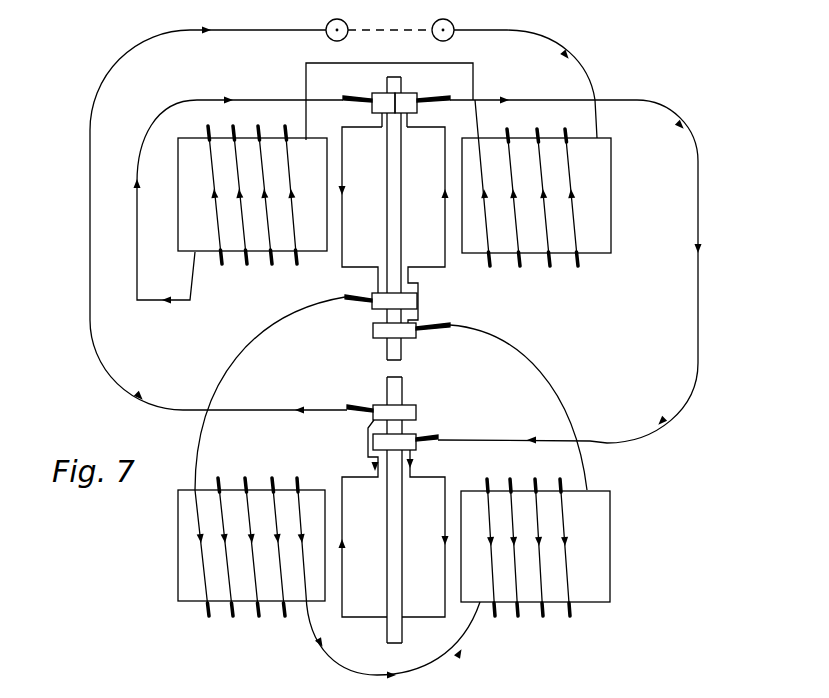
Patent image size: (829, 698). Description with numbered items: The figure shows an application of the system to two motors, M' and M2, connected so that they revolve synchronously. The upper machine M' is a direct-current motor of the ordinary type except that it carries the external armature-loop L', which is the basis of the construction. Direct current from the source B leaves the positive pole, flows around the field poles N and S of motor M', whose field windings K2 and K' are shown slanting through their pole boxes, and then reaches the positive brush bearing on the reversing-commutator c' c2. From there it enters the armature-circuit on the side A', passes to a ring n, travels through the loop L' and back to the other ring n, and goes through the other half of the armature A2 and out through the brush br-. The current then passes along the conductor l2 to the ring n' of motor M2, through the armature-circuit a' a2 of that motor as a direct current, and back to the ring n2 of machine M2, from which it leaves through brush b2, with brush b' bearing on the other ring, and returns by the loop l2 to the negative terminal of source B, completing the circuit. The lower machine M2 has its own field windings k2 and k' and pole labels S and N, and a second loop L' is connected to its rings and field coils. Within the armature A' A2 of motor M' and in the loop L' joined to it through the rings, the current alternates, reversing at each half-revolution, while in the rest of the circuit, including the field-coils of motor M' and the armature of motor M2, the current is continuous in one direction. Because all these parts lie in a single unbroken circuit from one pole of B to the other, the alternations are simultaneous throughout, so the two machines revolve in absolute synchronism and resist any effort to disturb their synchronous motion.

The source of direct current B is at (393, 20).
The loop l2 is at (396, 235).
The reversing-commutator segment c' is at (383, 103).
The reversing-commutator segment c2 is at (406, 103).
The negative brush br- is at (435, 89).
The armature-circuit side A' is at (361, 210).
The armature half A2 is at (428, 225).
The commutator ring n is at (397, 315).
The direct-current motor M' is at (403, 195).
The field coil K2 is at (252, 211).
The field coil K' is at (526, 201).
The south field pole S is at (394, 373).
The north field pole N is at (393, 413).
The external armature-loop L' is at (391, 488).
The commutator ring n2 is at (394, 412).
The commutator ring n' is at (394, 442).
The brush b2 is at (360, 400).
The brush b' is at (429, 429).
The armature-circuit side a' is at (363, 518).
The armature-circuit side a2 is at (425, 533).
The motor M2 is at (392, 546).
The field coil k2 is at (251, 559).
The field coil k' is at (528, 561).